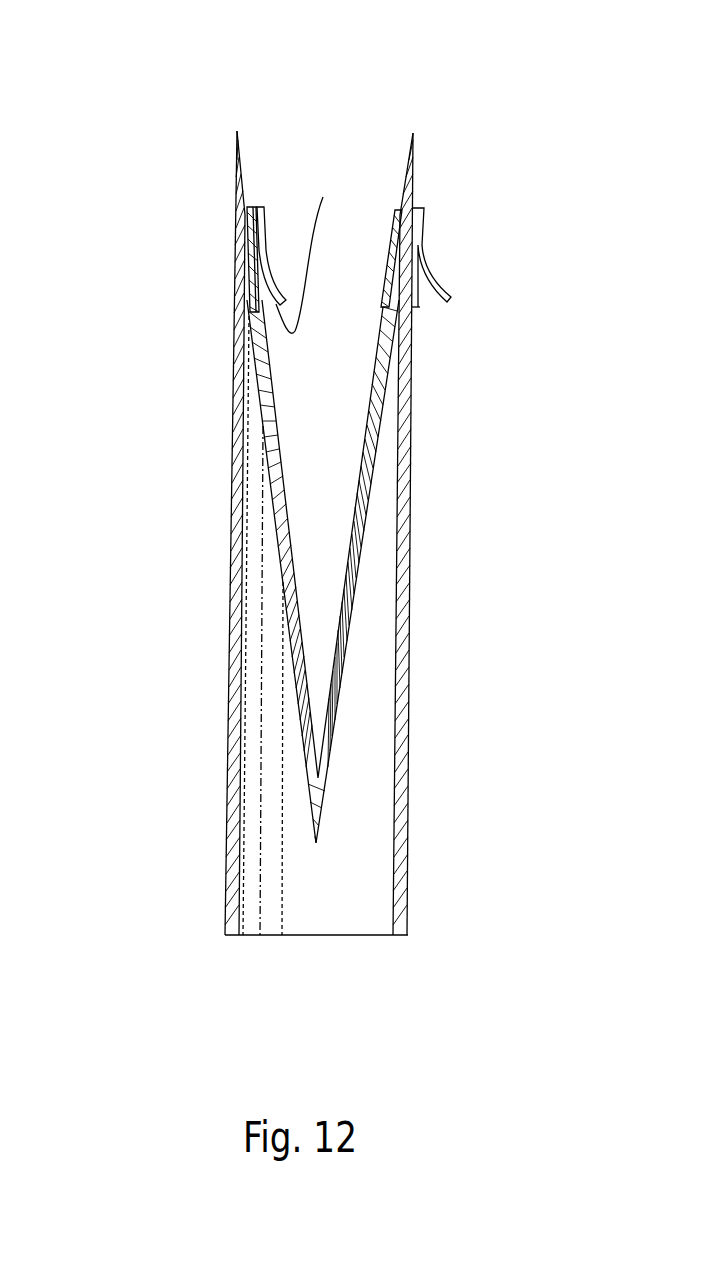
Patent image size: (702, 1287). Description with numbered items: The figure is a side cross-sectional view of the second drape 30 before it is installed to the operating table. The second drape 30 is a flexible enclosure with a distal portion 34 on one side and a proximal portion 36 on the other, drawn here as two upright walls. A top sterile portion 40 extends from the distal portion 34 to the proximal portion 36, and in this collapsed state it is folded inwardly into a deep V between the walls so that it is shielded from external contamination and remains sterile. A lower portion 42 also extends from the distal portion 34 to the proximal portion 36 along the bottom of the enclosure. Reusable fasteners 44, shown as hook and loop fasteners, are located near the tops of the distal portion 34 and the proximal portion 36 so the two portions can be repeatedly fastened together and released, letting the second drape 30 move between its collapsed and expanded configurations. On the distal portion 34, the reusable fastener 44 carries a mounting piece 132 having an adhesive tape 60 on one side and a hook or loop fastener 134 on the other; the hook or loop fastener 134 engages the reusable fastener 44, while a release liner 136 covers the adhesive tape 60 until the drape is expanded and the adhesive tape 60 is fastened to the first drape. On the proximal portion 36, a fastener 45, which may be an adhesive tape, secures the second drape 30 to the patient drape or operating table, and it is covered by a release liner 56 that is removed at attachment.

The second drape 30 is at (166, 858).
The distal portion 34 is at (233, 205).
The proximal portion 36 is at (414, 178).
The top sterile portion 40 is at (270, 413).
The lower portion 42 is at (303, 887).
The reusable fasteners 44 is at (248, 207).
The fastener 45 is at (420, 309).
The release liner 56 is at (432, 268).
The adhesive tape 60 is at (315, 248).
The mounting piece 132 is at (285, 255).
The hook and loop fastener 134 is at (253, 207).
The release liner 136 is at (272, 270).